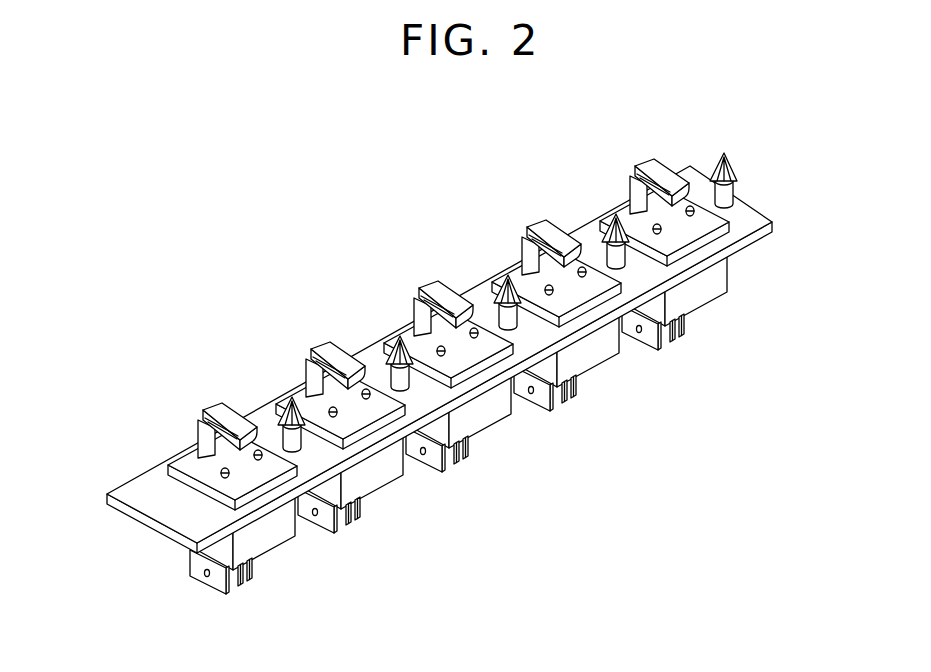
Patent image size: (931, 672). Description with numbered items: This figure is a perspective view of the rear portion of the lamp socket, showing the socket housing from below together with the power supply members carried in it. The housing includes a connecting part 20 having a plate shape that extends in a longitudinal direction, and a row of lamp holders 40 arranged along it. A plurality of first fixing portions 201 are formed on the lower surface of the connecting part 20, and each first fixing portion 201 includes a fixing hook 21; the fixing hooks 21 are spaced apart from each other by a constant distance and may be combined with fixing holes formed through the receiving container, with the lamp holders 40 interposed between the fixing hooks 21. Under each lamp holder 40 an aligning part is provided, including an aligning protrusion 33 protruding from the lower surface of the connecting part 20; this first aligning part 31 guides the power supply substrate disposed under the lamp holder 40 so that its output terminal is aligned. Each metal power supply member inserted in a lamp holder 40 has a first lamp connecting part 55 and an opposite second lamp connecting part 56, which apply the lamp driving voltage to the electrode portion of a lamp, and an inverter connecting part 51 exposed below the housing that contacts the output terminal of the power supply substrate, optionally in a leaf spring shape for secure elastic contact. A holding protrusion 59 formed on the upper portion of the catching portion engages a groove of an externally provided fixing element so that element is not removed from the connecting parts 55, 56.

The connecting part 20 is at (145, 495).
The fixing hook 21 is at (762, 152).
The first fixing portion 201 is at (736, 154).
The first aligning part 31 is at (698, 262).
The aligning protrusion 33 is at (666, 233).
The lamp holder 40 is at (270, 538).
The inverter connecting part 51 is at (320, 352).
The first lamp connecting part 55 is at (442, 470).
The second lamp connecting part 56 is at (464, 459).
The holding protrusion 59 is at (208, 576).